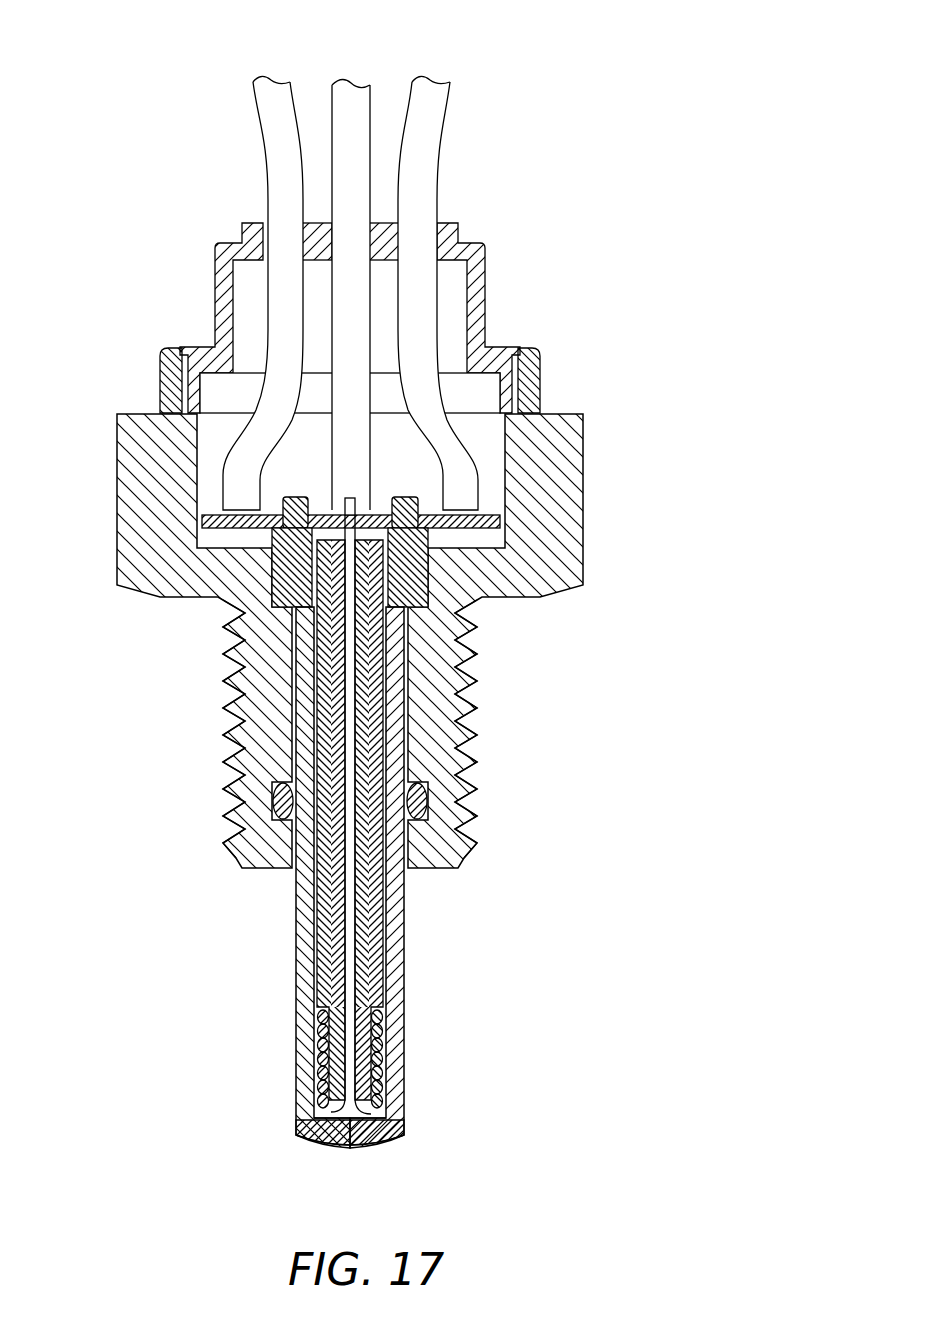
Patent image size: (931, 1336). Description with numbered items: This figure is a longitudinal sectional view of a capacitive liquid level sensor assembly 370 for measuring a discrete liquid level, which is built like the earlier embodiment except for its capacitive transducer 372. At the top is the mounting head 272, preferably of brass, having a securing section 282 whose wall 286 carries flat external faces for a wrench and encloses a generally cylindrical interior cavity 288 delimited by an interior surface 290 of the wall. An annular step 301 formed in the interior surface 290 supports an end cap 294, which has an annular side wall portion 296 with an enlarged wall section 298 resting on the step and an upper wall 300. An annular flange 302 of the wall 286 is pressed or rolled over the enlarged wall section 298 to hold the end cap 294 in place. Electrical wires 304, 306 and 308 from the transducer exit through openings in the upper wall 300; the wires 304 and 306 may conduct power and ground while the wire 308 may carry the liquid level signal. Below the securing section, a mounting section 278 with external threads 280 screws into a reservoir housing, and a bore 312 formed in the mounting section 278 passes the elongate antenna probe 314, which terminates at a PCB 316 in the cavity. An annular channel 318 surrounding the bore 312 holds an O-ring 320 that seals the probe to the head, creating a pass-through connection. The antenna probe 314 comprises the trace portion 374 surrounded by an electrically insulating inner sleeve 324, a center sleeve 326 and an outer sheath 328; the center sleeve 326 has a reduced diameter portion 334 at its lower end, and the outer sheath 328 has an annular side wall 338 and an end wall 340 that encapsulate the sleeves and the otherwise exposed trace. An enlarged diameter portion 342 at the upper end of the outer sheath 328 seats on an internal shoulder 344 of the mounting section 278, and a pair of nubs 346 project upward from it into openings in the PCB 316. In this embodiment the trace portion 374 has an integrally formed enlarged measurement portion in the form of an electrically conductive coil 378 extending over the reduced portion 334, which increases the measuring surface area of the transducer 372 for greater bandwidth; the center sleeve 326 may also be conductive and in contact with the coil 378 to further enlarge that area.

The mounting head 272 is at (366, 636).
The mounting section 278 is at (339, 729).
The external threads 280 is at (238, 690).
The securing section 282 is at (366, 636).
The wall 286 is at (366, 636).
The interior cavity 288 is at (462, 386).
The interior surface 290 is at (500, 390).
The end cap 294 is at (310, 290).
The annular side wall portion 296 is at (310, 290).
The enlarged wall section 298 is at (172, 390).
The upper wall 300 is at (310, 290).
The annular step 301 is at (592, 488).
The annular flange 302 is at (253, 222).
The electrical wire 304 is at (272, 106).
The electrical wire 306 is at (343, 82).
The electrical wire 308 is at (443, 92).
The bore 312 is at (339, 729).
The antenna probe 314 is at (300, 893).
The PCB 316 is at (205, 515).
The annular channel 318 is at (270, 800).
The right O-ring 320 is at (458, 788).
The inner sleeve 324 is at (356, 911).
The center sleeve 326 is at (320, 922).
The outer sheath 328 is at (298, 1010).
The reduced diameter portion 334 is at (406, 1004).
The annular side wall 338 is at (441, 1046).
The end wall 340 is at (330, 1144).
The enlarged diameter portion 342 is at (221, 594).
The internal shoulder 344 is at (276, 570).
The nubs 346 is at (292, 497).
The capacitive liquid level sensor assembly 370 is at (667, 265).
The capacitive transducer 372 is at (356, 911).
The trace portion 374 is at (350, 944).
The coil 378 is at (339, 1168).